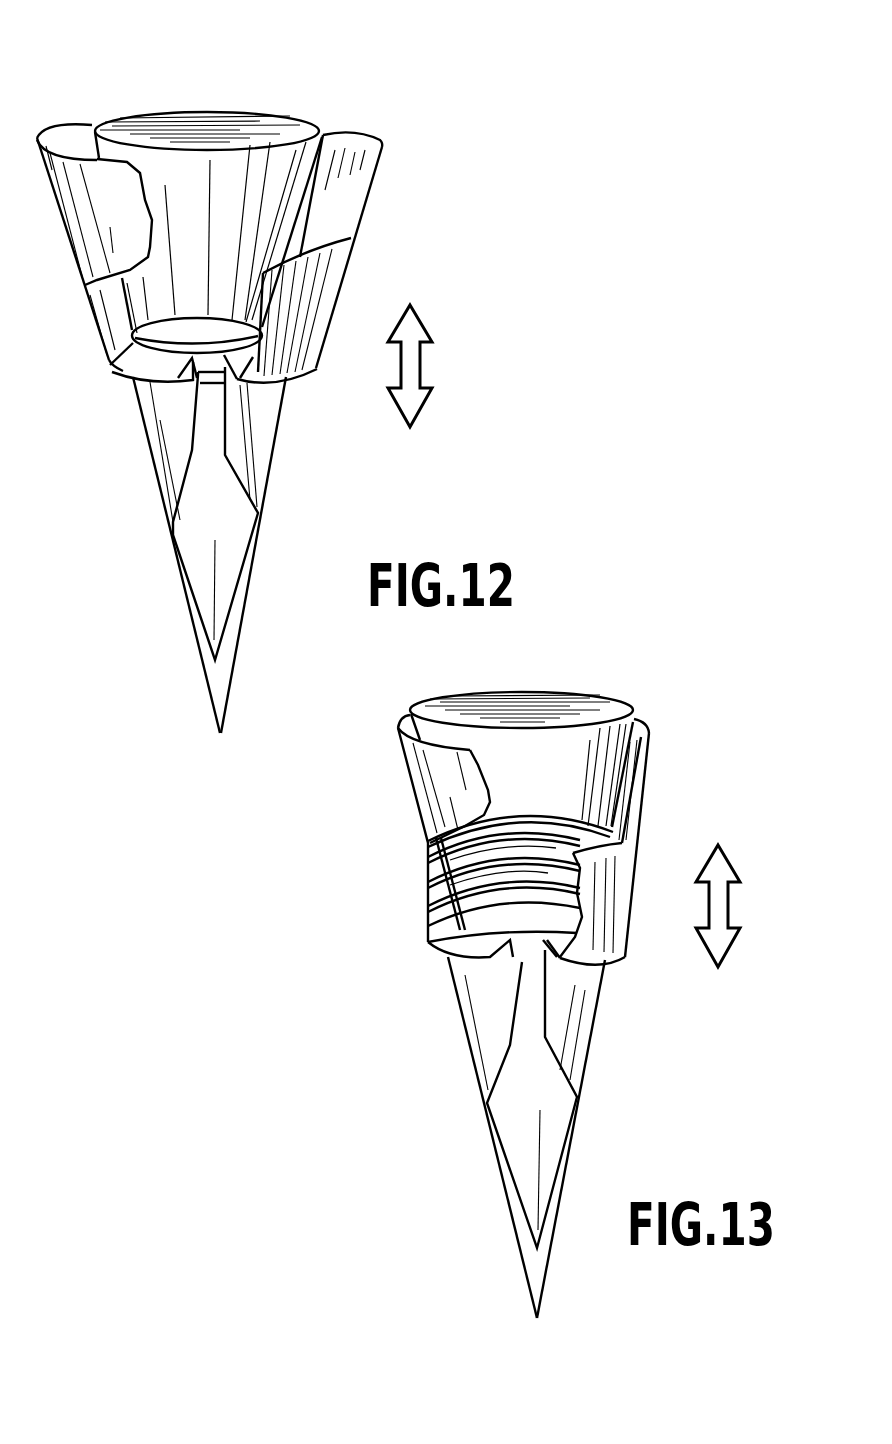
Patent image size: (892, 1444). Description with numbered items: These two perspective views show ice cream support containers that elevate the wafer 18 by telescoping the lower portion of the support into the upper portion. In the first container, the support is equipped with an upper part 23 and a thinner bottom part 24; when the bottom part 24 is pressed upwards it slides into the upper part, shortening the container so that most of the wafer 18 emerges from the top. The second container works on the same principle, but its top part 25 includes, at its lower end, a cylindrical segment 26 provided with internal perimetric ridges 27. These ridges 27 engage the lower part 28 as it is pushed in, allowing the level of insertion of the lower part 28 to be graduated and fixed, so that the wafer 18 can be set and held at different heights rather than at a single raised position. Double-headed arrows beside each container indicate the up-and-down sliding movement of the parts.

In FIG. 12, the wafer 18 is at (157, 113).
In FIG. 13, the wafer 18 is at (438, 700).
In FIG. 12, the upper part 23 is at (362, 218).
In FIG. 12, the bottom part 24 is at (272, 487).
In FIG. 13, the top part 25 is at (412, 782).
In FIG. 13, the cylindrical segment 26 is at (628, 873).
In FIG. 13, the internal perimetric ridges 27 is at (428, 875).
In FIG. 13, the lower part 28 is at (465, 1025).